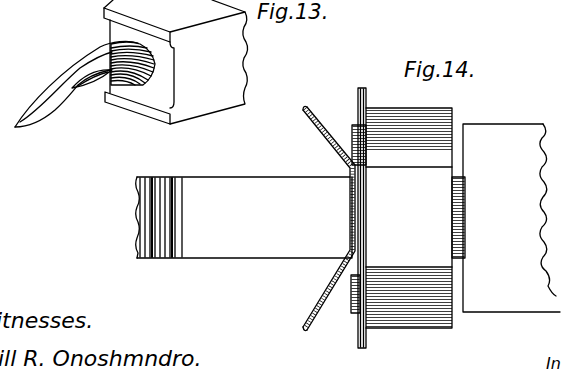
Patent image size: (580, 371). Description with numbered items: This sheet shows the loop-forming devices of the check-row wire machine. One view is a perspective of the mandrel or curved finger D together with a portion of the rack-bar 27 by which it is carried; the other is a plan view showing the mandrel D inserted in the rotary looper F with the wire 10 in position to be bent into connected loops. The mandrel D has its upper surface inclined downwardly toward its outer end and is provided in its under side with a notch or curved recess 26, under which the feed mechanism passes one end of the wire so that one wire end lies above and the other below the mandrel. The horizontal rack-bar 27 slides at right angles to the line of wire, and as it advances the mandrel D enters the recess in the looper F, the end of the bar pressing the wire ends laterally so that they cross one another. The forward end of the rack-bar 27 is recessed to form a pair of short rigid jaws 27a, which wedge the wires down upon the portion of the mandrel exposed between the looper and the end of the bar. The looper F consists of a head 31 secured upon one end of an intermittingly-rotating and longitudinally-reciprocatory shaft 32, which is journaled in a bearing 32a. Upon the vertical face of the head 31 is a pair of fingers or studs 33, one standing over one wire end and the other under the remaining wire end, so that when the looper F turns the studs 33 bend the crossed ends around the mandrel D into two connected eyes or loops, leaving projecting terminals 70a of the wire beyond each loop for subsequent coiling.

In FIG. 14, the wire 10 is at (305, 110).
In FIG. 13, the notch or curved recess 26 is at (86, 86).
In FIG. 13, the rack-bar 27 is at (176, 62).
In FIG. 14, the rack-bar 27 is at (244, 217).
In FIG. 13, the short rigid jaws 27a is at (133, 122).
In FIG. 14, the head 31 is at (409, 218).
In FIG. 14, the shaft 32 is at (459, 205).
In FIG. 14, the bearing 32a is at (523, 132).
In FIG. 14, the fingers or studs 33 is at (352, 130).
In FIG. 14, the retaining plate 70a is at (377, 352).
In FIG. 13, the mandrel or curved finger D is at (43, 79).
In FIG. 14, the mandrel or curved finger D is at (343, 198).
In FIG. 14, the rotary looper F is at (393, 94).